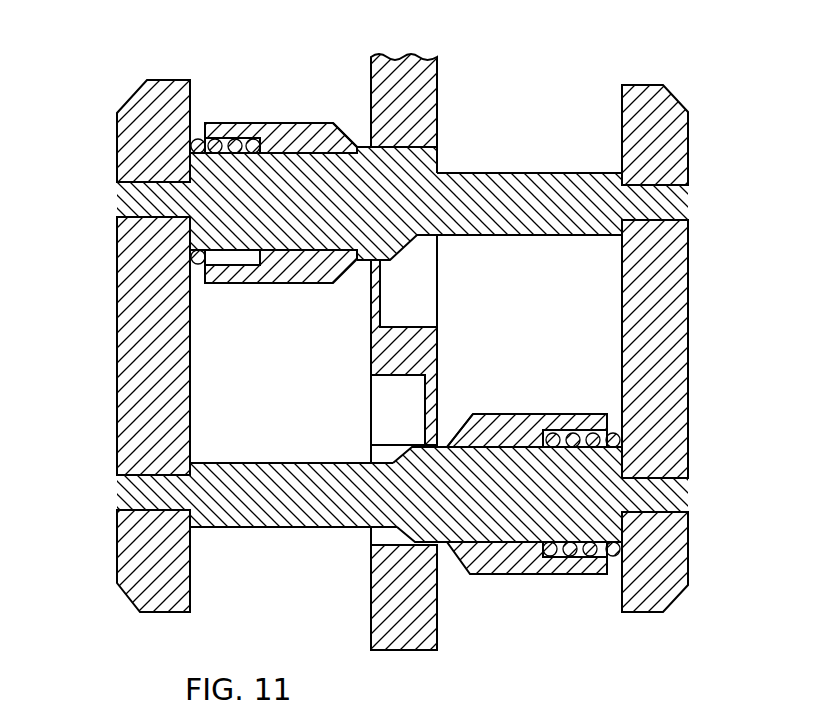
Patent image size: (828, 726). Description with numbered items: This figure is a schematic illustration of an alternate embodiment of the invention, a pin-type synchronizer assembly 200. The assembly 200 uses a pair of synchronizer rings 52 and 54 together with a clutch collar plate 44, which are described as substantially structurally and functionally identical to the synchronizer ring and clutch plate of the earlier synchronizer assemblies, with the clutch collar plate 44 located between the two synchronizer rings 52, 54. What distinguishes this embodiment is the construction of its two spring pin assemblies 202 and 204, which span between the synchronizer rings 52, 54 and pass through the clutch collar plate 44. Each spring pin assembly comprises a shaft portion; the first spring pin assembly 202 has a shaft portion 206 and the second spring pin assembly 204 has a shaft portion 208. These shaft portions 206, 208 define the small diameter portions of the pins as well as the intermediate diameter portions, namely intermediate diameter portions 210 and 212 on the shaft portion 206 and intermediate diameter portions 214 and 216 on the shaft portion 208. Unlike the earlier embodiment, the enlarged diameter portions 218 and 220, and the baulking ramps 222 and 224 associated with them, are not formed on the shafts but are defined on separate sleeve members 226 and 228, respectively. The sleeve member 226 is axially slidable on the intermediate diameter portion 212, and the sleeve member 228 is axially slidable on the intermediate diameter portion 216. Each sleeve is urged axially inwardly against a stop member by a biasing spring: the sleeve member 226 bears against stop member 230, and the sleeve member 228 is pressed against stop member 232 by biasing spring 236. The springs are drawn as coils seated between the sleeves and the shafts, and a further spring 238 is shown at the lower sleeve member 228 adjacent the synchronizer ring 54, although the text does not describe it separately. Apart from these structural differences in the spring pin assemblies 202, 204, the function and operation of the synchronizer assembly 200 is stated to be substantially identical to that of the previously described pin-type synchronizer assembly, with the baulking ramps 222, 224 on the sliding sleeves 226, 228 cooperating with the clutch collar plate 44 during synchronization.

The clutch collar plate 44 is at (437, 336).
The synchronizer ring 52 is at (117, 312).
The synchronizer ring 54 is at (688, 316).
The pin-type synchronizer assembly 200 is at (506, 106).
The spring pin assembly 202 is at (543, 163).
The spring pin assembly 204 is at (314, 547).
The shaft portion 206 is at (402, 203).
The shaft portion 208 is at (402, 494).
The intermediate diameter portion 210 is at (503, 173).
The intermediate diameter portion 212 is at (331, 150).
The intermediate diameter portion 214 is at (236, 450).
The intermediate diameter portion 216 is at (506, 545).
The enlarged diameter portion 218 is at (284, 109).
The enlarged diameter portion 220 is at (526, 402).
The baulking ramp 222 is at (353, 143).
The baulking ramp 224 is at (446, 443).
The sleeve member 226 is at (308, 273).
The sleeve member 228 is at (487, 560).
The stop member 230 is at (373, 252).
The stop member 232 is at (437, 452).
The biasing spring 236 is at (197, 138).
The spring 238 is at (612, 553).